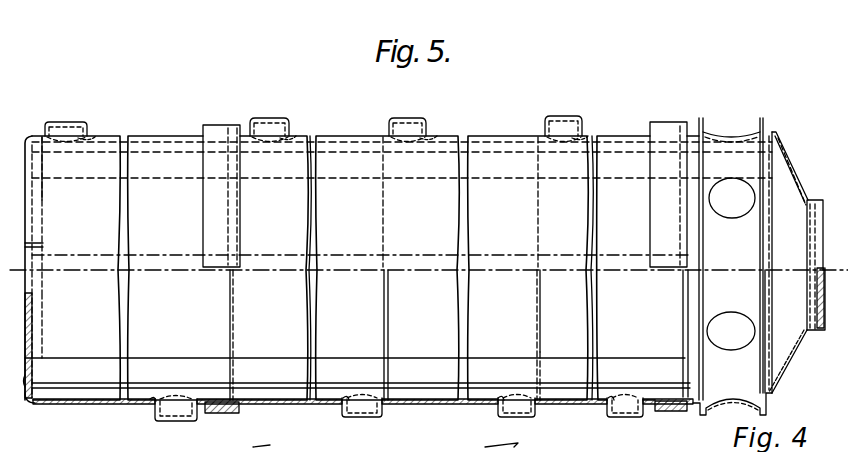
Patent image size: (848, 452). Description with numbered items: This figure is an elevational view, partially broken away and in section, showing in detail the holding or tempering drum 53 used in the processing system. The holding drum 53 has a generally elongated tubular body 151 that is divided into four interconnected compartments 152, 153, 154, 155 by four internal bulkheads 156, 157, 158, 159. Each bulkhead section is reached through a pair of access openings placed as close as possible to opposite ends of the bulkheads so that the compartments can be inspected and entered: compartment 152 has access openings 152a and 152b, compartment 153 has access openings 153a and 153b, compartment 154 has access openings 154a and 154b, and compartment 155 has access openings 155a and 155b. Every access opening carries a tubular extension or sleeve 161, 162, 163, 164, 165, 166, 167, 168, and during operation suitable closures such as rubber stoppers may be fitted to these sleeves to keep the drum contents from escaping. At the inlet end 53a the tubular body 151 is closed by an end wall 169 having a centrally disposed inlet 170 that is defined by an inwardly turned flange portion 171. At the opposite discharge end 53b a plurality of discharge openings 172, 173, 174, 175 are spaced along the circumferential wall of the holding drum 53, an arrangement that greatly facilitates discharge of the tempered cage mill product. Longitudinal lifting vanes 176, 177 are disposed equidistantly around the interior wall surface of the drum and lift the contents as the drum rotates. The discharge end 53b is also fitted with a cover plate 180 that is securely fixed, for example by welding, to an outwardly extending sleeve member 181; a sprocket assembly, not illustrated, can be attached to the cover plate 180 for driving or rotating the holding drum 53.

The holding drum 53 is at (490, 133).
The inlet end 53a is at (26, 396).
The discharge end 53b is at (786, 144).
The tubular body 151 is at (337, 137).
The compartment 152 is at (97, 307).
The access opening 152a is at (95, 136).
The access opening 152b is at (150, 403).
The compartment 153 is at (360, 304).
The access opening 153a is at (290, 136).
The access opening 153b is at (345, 408).
The compartment 154 is at (516, 299).
The access opening 154a is at (432, 134).
The access opening 154b is at (496, 406).
The compartment 155 is at (651, 296).
The access opening 155a is at (584, 134).
The access opening 155b is at (612, 405).
The internal bulkhead 156 is at (236, 322).
The internal bulkhead 157 is at (390, 315).
The internal bulkhead 158 is at (541, 315).
The internal bulkhead 159 is at (689, 282).
The tubular extension or sleeve 161 is at (75, 121).
The tubular extension or sleeve 162 is at (186, 419).
The tubular extension or sleeve 163 is at (266, 118).
The tubular extension or sleeve 164 is at (380, 416).
The tubular extension or sleeve 165 is at (407, 118).
The tubular extension or sleeve 166 is at (536, 412).
The tubular extension or sleeve 167 is at (562, 116).
The tubular extension or sleeve 168 is at (642, 413).
The end wall 169 is at (25, 142).
The inlet 170 is at (42, 268).
The inwardly turned flange portion 171 is at (52, 245).
The discharge opening 172 is at (722, 133).
The discharge opening 173 is at (731, 180).
The discharge opening 174 is at (733, 350).
The discharge opening 175 is at (740, 397).
The longitudinal lifting vane 176 is at (164, 366).
The longitudinal lifting vane 177 is at (154, 166).
The cover plate 180 is at (826, 201).
The outwardly extending sleeve member 181 is at (807, 334).